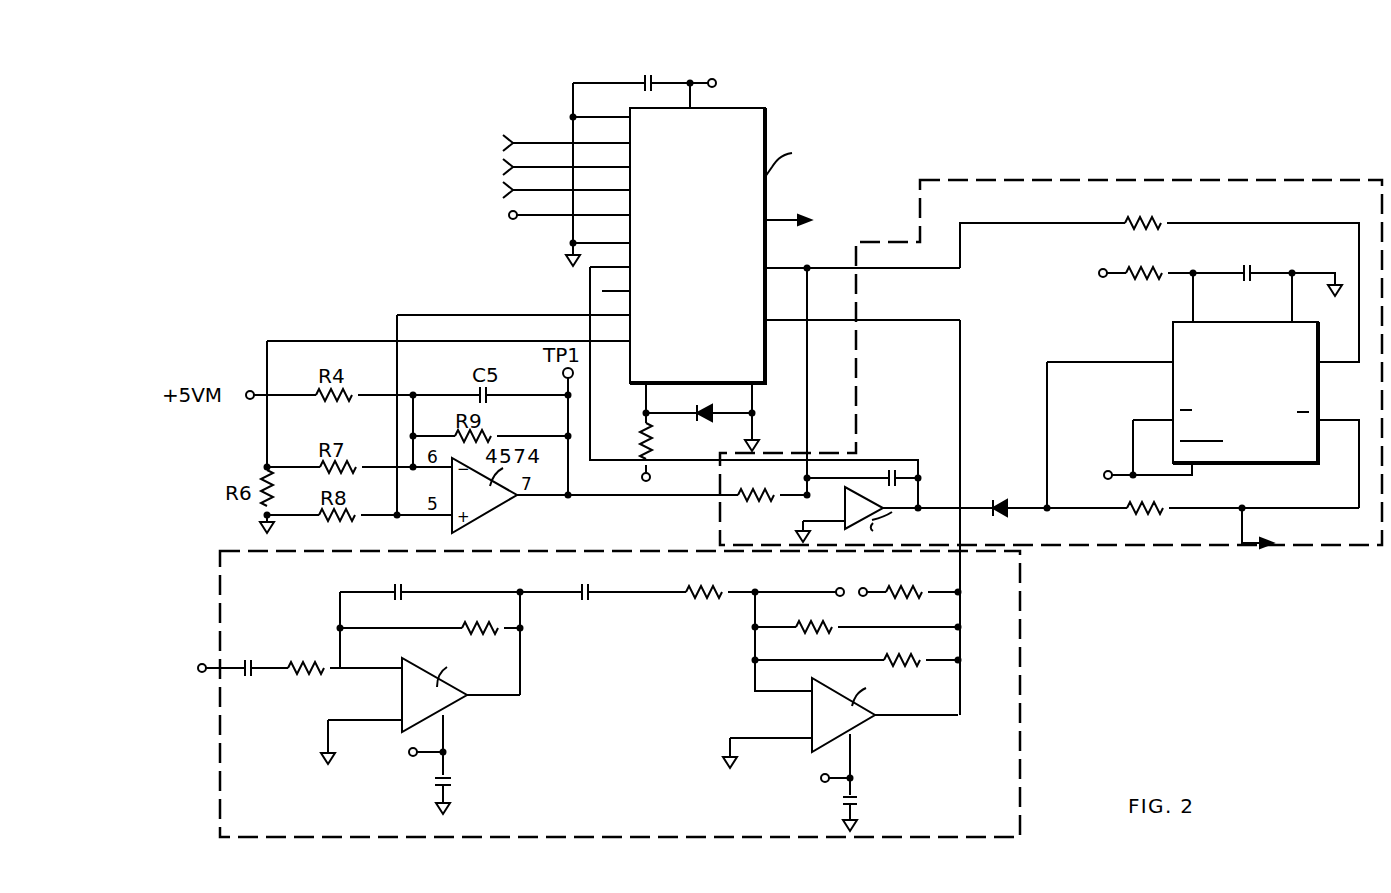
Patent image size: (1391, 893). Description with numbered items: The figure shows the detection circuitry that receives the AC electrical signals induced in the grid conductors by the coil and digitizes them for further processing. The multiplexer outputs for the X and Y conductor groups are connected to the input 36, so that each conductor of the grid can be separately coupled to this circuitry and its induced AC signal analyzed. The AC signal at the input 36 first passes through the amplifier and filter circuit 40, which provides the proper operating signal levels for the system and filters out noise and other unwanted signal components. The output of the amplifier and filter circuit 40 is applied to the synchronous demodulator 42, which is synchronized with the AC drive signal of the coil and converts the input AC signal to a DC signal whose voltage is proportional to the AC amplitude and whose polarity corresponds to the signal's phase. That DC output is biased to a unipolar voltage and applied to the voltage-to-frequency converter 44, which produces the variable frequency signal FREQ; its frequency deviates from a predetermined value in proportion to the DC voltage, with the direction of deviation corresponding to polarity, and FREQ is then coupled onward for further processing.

The input 36 is at (203, 673).
The amplifier and filter circuit 40 is at (230, 535).
The synchronous demodulator 42 is at (795, 113).
The voltage-to-frequency converter 44 is at (1047, 182).